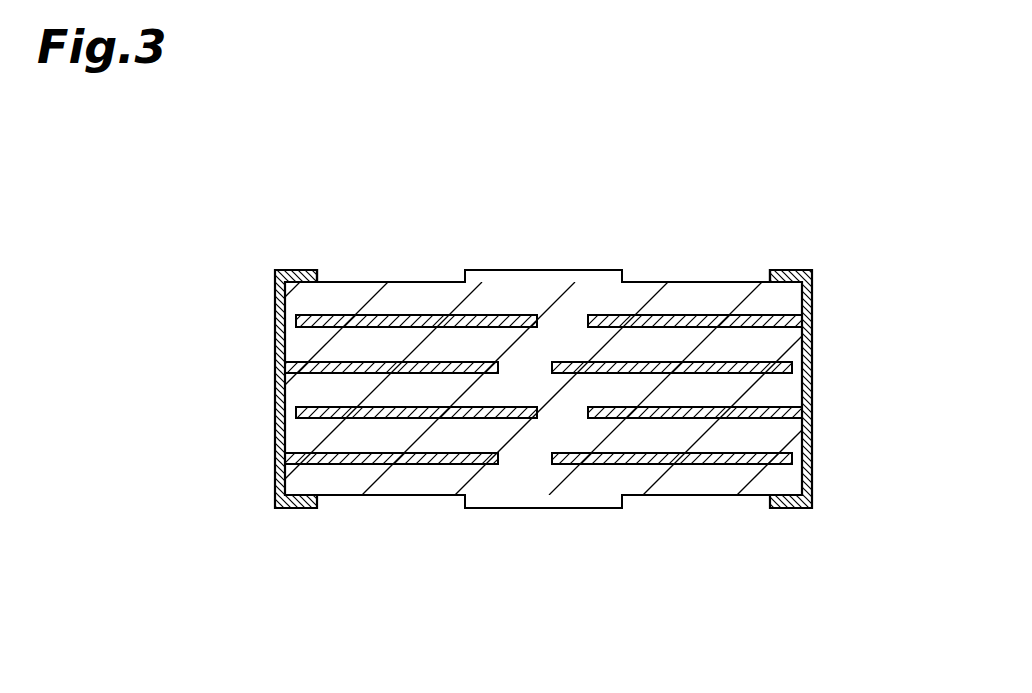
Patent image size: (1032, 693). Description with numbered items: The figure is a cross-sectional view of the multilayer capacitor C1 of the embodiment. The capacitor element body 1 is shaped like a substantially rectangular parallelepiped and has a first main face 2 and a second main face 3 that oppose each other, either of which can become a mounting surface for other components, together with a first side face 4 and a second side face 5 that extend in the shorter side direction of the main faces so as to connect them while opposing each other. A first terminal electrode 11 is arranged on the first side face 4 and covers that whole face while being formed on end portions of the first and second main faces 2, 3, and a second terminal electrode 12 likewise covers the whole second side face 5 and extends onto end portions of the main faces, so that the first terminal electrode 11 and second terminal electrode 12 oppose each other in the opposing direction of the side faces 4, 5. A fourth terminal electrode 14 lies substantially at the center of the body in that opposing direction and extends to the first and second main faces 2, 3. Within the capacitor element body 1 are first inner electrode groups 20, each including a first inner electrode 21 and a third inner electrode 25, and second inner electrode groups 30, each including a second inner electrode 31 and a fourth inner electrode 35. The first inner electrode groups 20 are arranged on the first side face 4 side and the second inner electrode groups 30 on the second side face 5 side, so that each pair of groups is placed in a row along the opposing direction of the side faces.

The capacitor element body 1 is at (352, 501).
The first main face 2 is at (703, 282).
The second main face 3 is at (720, 496).
The first side face 4 is at (281, 386).
The second side face 5 is at (805, 387).
The first terminal electrode 11 is at (297, 270).
The second terminal electrode 12 is at (792, 270).
The fourth terminal electrode 14 is at (541, 508).
The first inner electrode group 20 is at (447, 204).
The first inner electrode 21 is at (427, 362).
The third inner electrode 25 is at (386, 315).
The second inner electrode group 30 is at (697, 204).
The second inner electrode 31 is at (632, 315).
The fourth inner electrode 35 is at (672, 362).
The multilayer capacitor C1 is at (843, 185).